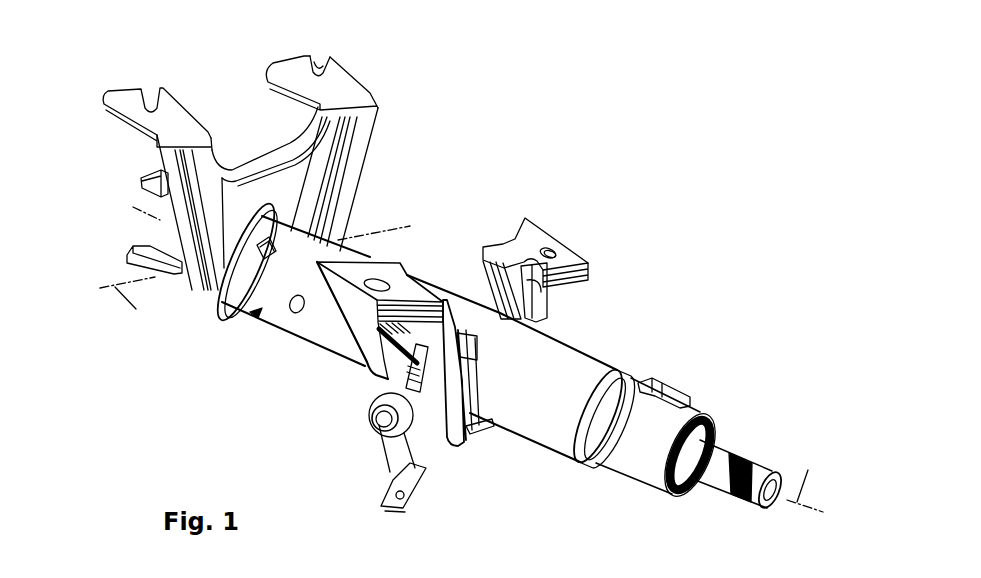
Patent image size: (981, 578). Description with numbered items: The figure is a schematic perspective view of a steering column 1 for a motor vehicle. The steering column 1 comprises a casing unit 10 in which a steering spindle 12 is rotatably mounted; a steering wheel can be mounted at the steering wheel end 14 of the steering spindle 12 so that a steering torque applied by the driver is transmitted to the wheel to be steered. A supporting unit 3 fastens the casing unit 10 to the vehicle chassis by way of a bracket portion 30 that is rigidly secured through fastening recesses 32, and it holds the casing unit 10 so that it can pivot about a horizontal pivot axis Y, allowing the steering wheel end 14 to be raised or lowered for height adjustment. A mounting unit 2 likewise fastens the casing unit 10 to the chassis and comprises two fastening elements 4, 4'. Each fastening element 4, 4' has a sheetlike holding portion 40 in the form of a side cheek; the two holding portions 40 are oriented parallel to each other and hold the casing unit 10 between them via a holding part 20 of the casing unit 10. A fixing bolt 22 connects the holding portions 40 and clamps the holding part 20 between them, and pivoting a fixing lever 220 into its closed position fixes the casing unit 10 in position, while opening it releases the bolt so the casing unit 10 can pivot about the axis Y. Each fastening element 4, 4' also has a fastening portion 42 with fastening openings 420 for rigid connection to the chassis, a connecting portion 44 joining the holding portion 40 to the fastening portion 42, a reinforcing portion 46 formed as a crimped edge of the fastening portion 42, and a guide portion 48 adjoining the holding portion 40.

The steering column 1 is at (660, 190).
The mounting unit 2 is at (550, 200).
The supporting unit 3 is at (386, 67).
The fastening element 4 is at (365, 411).
The fastening element 4' is at (561, 270).
The casing unit 10 is at (577, 367).
The steering spindle 12 is at (710, 468).
The steering wheel end 14 is at (747, 500).
The holding part 20 is at (490, 430).
The fixing bolt 22 is at (382, 417).
The bracket portion 30 is at (300, 77).
The fastening recesses 32 is at (317, 68).
The holding portion 40 is at (428, 445).
The fastening portion 42 is at (355, 280).
The connecting portion 44 is at (380, 333).
The reinforcing portion 46 is at (372, 340).
The guide portion 48 is at (455, 445).
The fixing lever 220 is at (393, 503).
The fastening openings 420 is at (553, 254).